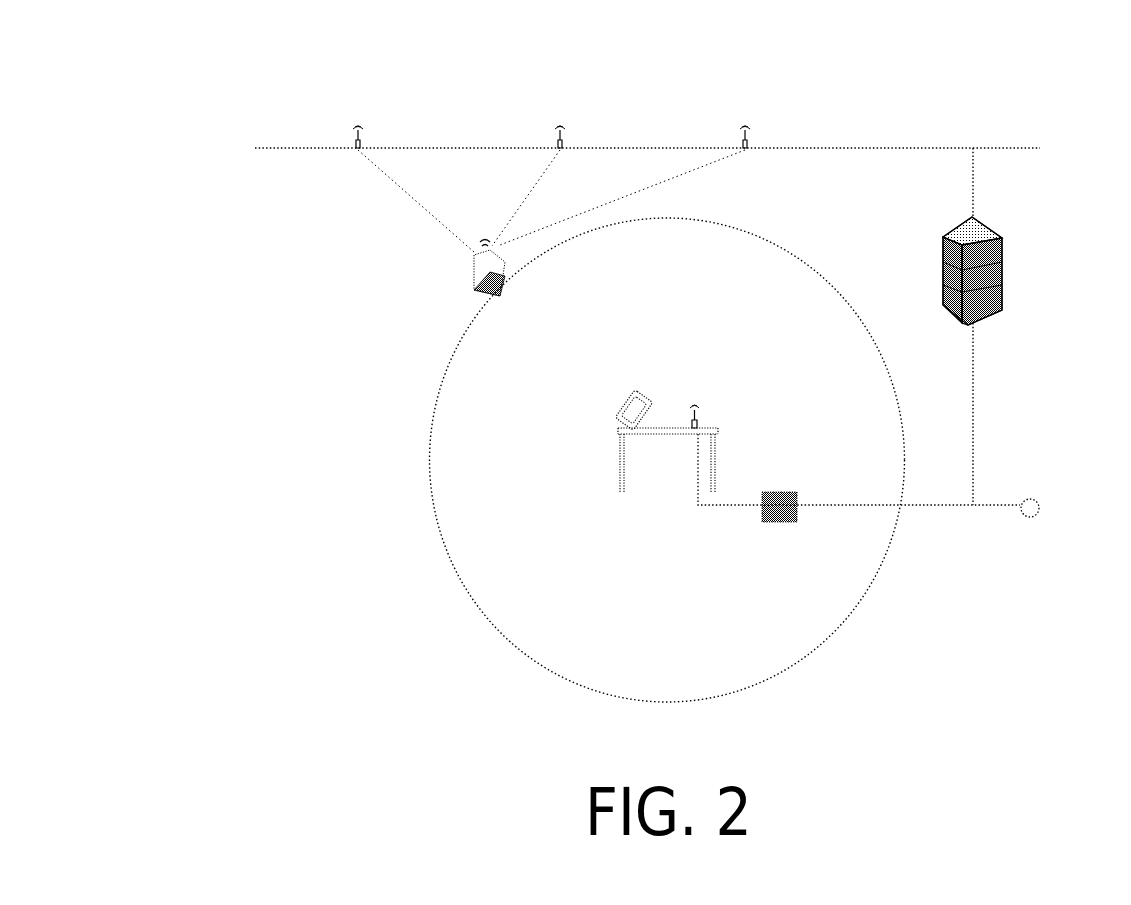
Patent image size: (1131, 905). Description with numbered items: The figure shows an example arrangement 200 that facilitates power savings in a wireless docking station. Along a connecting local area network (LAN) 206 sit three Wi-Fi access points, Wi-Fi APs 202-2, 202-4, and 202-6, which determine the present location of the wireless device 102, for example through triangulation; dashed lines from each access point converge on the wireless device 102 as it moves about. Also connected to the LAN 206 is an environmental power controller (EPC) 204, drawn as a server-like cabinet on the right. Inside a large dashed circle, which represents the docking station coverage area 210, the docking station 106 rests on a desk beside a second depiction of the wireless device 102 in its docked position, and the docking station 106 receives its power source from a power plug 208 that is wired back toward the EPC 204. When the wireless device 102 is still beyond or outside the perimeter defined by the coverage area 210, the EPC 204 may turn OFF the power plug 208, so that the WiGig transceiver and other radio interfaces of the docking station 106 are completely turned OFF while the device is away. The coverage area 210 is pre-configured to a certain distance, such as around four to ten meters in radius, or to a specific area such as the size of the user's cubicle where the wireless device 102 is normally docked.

The example arrangement 200 is at (172, 46).
The Wi-Fi AP 202-2 is at (306, 108).
The Wi-Fi AP 202-4 is at (527, 120).
The Wi-Fi AP 202-6 is at (699, 110).
The local area network (LAN) 206 is at (819, 112).
The environmental power controller (EPC) 204 is at (1001, 212).
The docking station coverage area 210 is at (429, 416).
The wireless device 102 is at (452, 257).
The docking station 106 is at (689, 392).
The power plug 208 is at (752, 521).